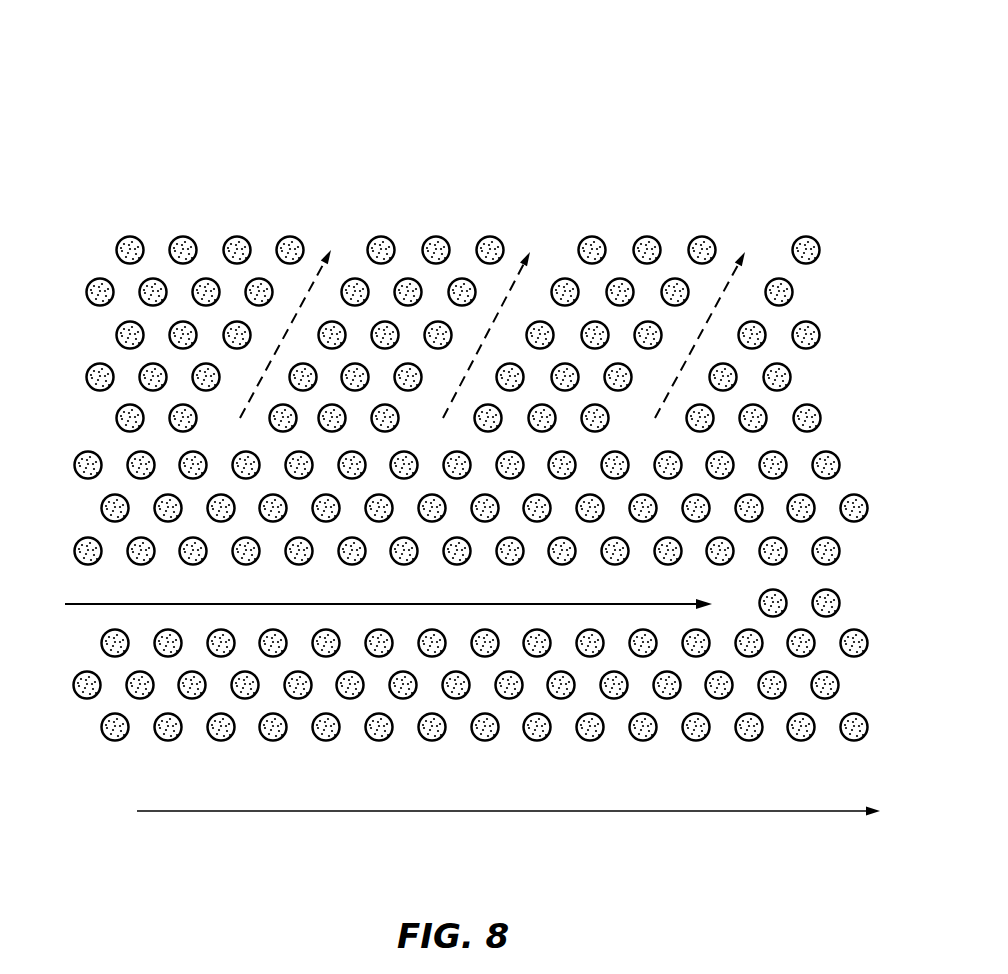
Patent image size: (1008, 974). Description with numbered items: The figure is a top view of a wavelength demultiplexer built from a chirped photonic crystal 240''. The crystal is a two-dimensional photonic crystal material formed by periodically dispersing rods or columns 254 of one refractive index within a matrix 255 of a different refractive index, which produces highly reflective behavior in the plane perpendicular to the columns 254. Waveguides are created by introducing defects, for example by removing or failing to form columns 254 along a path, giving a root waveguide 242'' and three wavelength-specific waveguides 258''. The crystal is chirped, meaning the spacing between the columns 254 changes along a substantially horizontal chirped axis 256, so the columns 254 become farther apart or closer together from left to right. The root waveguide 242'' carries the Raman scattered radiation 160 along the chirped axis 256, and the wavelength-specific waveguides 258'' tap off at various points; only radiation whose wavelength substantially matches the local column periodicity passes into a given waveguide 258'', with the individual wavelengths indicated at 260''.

The chirped photonic crystal 240'' is at (446, 386).
The rods or columns 254 is at (140, 288).
The matrix 255 is at (127, 363).
The wavelength-specific waveguides 258'' is at (581, 256).
The wavelength output directions 260'' is at (504, 257).
The root waveguide 242'' is at (356, 581).
The Raman scattered radiation 160 is at (113, 604).
The chirped axis 256 is at (287, 811).